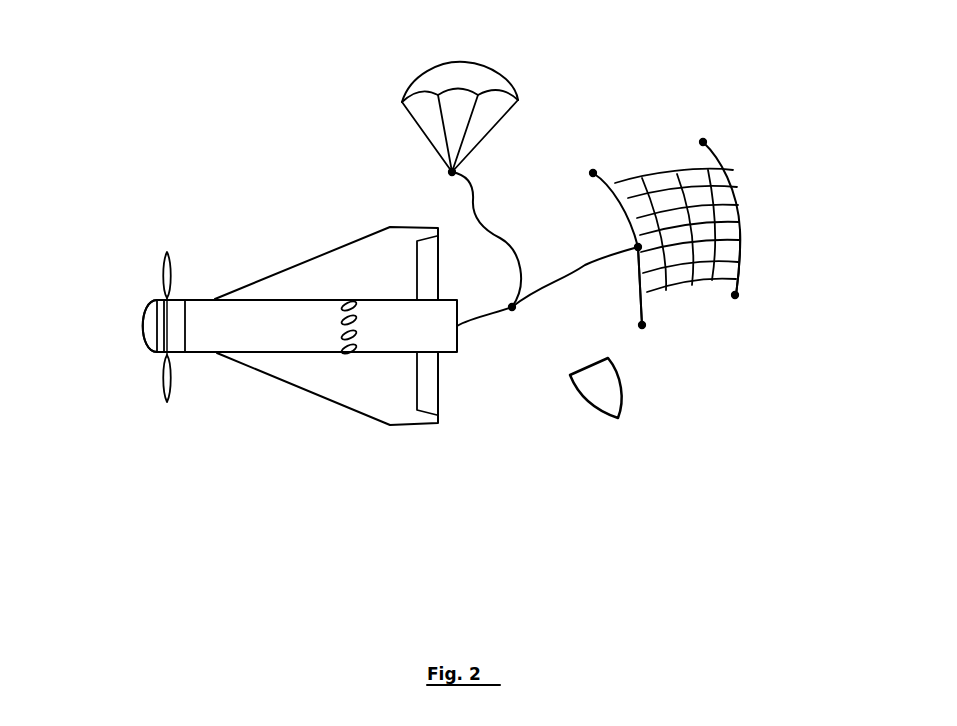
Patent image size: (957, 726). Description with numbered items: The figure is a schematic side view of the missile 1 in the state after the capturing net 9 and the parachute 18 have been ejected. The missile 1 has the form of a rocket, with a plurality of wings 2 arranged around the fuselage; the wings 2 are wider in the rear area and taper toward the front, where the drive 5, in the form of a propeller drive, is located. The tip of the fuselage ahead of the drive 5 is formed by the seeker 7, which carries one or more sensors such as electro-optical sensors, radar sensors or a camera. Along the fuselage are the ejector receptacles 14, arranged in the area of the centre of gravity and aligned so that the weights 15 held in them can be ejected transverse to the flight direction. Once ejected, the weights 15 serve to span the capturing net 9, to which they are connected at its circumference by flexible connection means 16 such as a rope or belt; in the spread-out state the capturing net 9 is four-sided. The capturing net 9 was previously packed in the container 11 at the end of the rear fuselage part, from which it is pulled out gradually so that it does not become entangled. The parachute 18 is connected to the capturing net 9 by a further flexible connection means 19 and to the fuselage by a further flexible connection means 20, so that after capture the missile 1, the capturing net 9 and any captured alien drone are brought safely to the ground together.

The missile 1 is at (233, 432).
The wings 2 is at (314, 270).
The drive 5 is at (148, 362).
The seeker 7 is at (148, 328).
The capturing net 9 is at (755, 183).
The container 11 is at (610, 393).
The ejector receptacles 14 is at (357, 302).
The weights 15 is at (593, 170).
The flexible connection means 16 is at (738, 280).
The parachute 18 is at (532, 82).
The further flexible connection means 19 is at (510, 240).
The further flexible connection means 20 is at (478, 313).